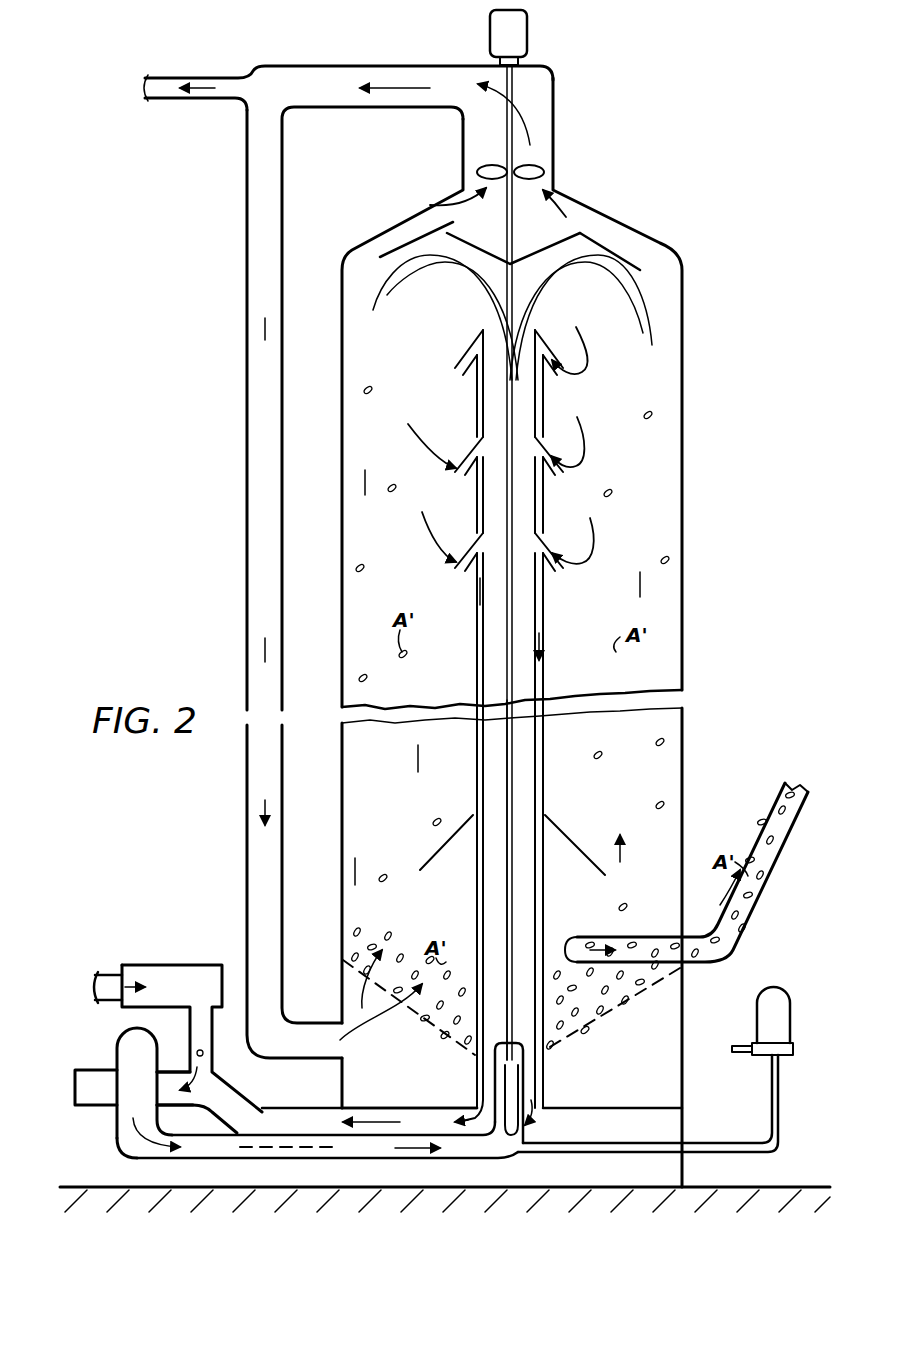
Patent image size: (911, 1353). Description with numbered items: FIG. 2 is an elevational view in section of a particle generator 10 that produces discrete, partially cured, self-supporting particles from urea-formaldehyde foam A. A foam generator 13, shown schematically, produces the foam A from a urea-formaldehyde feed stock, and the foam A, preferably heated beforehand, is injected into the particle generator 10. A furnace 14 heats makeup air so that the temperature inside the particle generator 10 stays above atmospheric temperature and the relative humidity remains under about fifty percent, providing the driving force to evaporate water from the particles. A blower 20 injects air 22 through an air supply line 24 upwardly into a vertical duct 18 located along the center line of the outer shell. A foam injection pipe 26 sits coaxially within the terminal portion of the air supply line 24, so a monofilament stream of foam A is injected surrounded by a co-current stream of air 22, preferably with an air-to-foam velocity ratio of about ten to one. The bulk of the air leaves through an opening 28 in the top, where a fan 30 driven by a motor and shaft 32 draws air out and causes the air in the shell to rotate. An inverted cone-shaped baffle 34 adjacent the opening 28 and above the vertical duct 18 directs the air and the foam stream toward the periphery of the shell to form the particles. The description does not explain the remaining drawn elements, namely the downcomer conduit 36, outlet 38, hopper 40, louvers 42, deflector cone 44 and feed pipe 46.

The particle generator 10 is at (674, 166).
The foam generator 13 is at (784, 985).
The furnace 14 is at (185, 965).
The vertical duct 18 is at (477, 752).
The blower 20 is at (127, 1045).
The air 22 is at (497, 897).
The air supply line 24 is at (247, 1154).
The foam injection pipe 26 is at (578, 1146).
The opening 28 is at (468, 196).
The fan 30 is at (540, 168).
The motor and shaft 32 is at (518, 62).
The inverted cone-shaped baffle 34 is at (510, 263).
The downcomer conduit 36 is at (250, 272).
The outlet 38 is at (208, 90).
The hopper 40 is at (607, 1010).
The louvers 42 is at (466, 362).
The deflector cone 44 is at (436, 866).
The feed pipe 46 is at (760, 830).
The urea-formaldehyde foam A is at (512, 785).